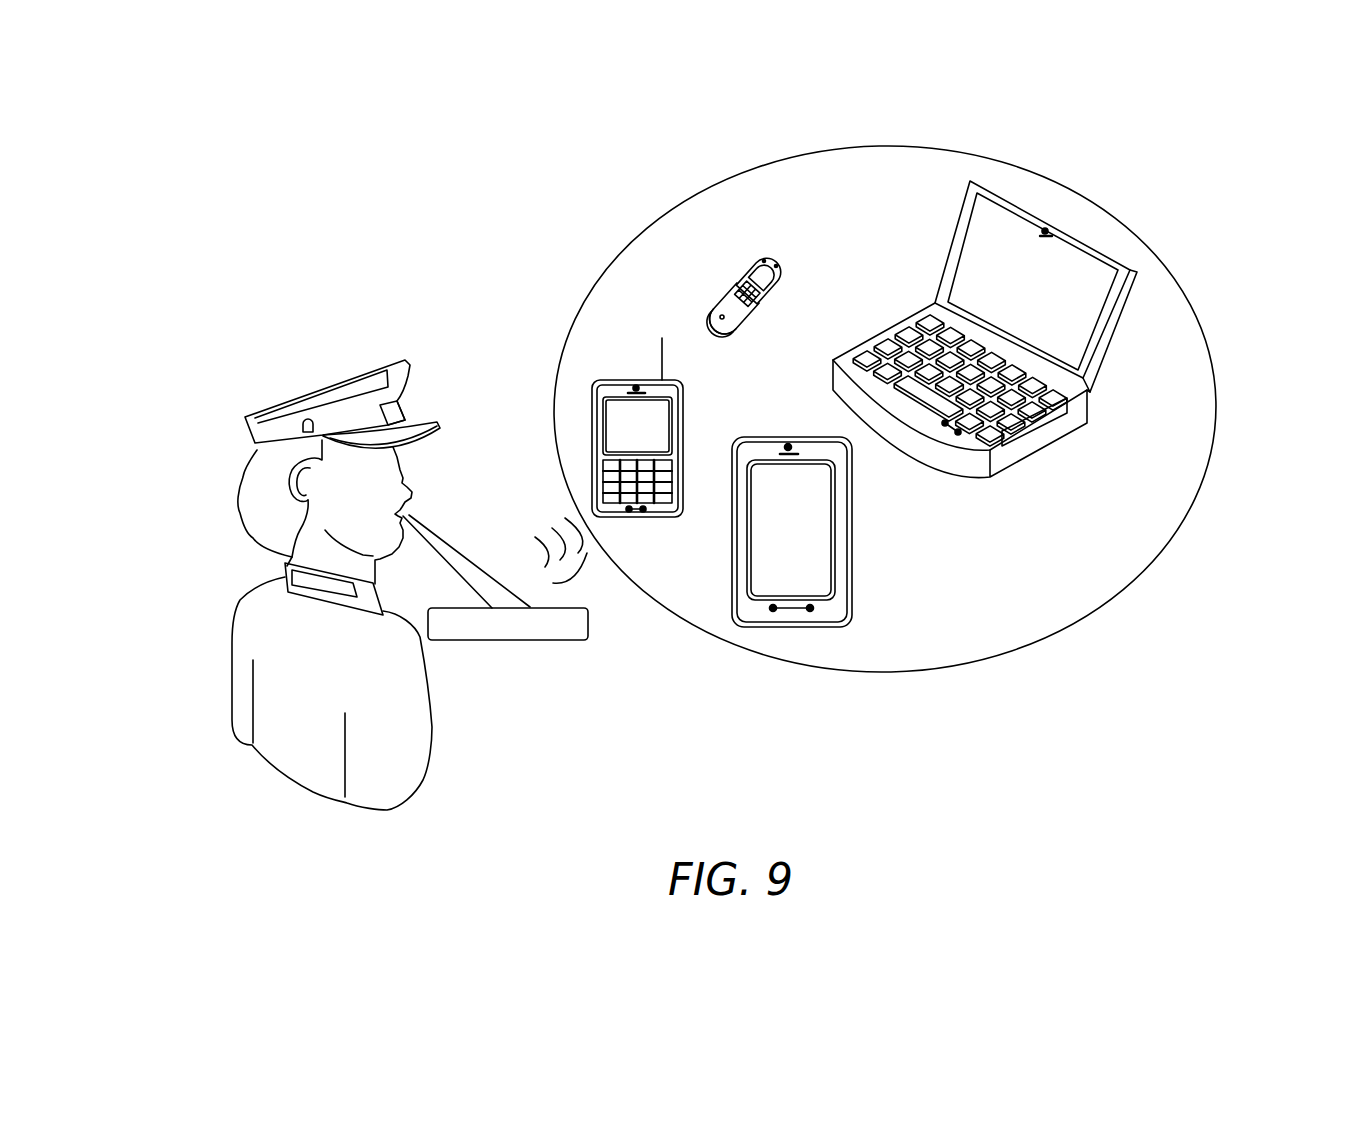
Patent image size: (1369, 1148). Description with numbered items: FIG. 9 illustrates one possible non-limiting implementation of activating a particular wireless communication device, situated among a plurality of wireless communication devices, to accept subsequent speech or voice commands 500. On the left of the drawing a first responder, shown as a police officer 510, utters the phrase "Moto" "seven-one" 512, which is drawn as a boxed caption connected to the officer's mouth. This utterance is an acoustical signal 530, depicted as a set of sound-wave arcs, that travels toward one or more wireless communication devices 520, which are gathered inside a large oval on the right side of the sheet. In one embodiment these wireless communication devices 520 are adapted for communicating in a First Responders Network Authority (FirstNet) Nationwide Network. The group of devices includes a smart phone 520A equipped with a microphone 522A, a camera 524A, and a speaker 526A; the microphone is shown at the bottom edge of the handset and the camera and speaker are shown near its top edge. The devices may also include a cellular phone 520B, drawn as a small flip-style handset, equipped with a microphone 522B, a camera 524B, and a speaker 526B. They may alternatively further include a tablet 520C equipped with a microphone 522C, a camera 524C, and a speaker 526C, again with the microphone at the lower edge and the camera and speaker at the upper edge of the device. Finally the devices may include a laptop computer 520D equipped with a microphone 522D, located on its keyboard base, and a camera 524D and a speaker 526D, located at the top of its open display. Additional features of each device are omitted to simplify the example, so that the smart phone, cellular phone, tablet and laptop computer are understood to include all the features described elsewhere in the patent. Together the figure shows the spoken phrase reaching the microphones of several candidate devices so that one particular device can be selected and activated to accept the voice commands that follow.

The activating a particular wireless communication device to accept subsequent speec 500 is at (570, 179).
The police officer 510 is at (222, 538).
The phrase "Moto" "7-1" 512 is at (505, 640).
The wireless communication devices 520 is at (1180, 540).
The smart phone 520A is at (592, 449).
The microphone 522A is at (640, 512).
The camera 524A is at (636, 386).
The speaker 526A is at (640, 391).
The cellular phone 520B is at (783, 287).
The microphone 522B is at (722, 315).
The camera 524B is at (763, 258).
The speaker 526B is at (777, 264).
The tablet 520C is at (852, 528).
The microphone 522C is at (790, 612).
The camera 524C is at (788, 445).
The speaker 526C is at (796, 450).
The laptop computer 520D is at (1130, 307).
The microphone 522D is at (950, 430).
The camera 524D is at (1045, 230).
The speaker 526D is at (1051, 233).
The acoustical signal 530 is at (615, 595).